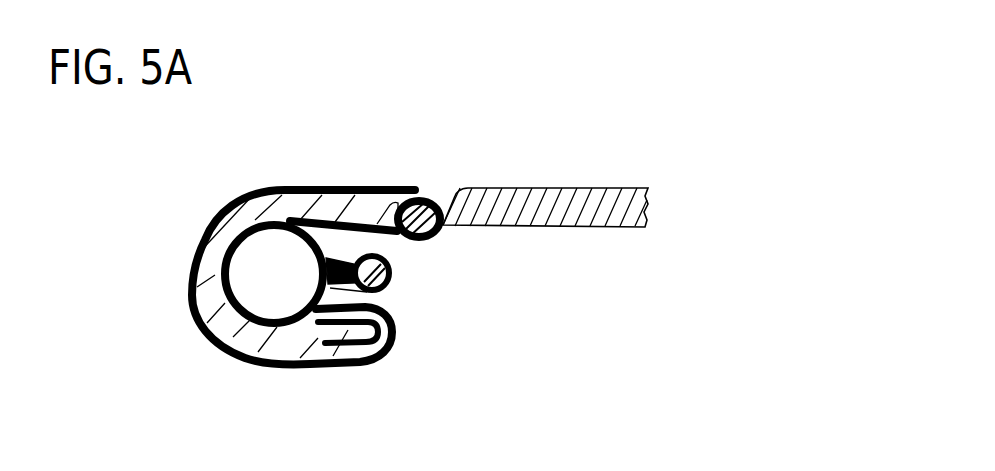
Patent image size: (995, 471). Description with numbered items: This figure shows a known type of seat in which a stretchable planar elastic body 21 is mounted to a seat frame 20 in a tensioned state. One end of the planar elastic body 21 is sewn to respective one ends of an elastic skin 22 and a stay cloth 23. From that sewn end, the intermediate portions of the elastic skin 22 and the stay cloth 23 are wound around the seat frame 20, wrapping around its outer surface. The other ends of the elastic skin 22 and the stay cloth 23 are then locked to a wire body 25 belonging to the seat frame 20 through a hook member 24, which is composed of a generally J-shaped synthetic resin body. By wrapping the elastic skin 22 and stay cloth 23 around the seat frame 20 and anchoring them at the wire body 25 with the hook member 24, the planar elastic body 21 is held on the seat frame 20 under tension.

The seat frame 20 is at (262, 295).
The planar elastic body 21 is at (573, 197).
The elastic skin 22 is at (189, 262).
The stay cloth 23 is at (272, 363).
The hook member 24 is at (388, 277).
The wire body 25 is at (363, 301).